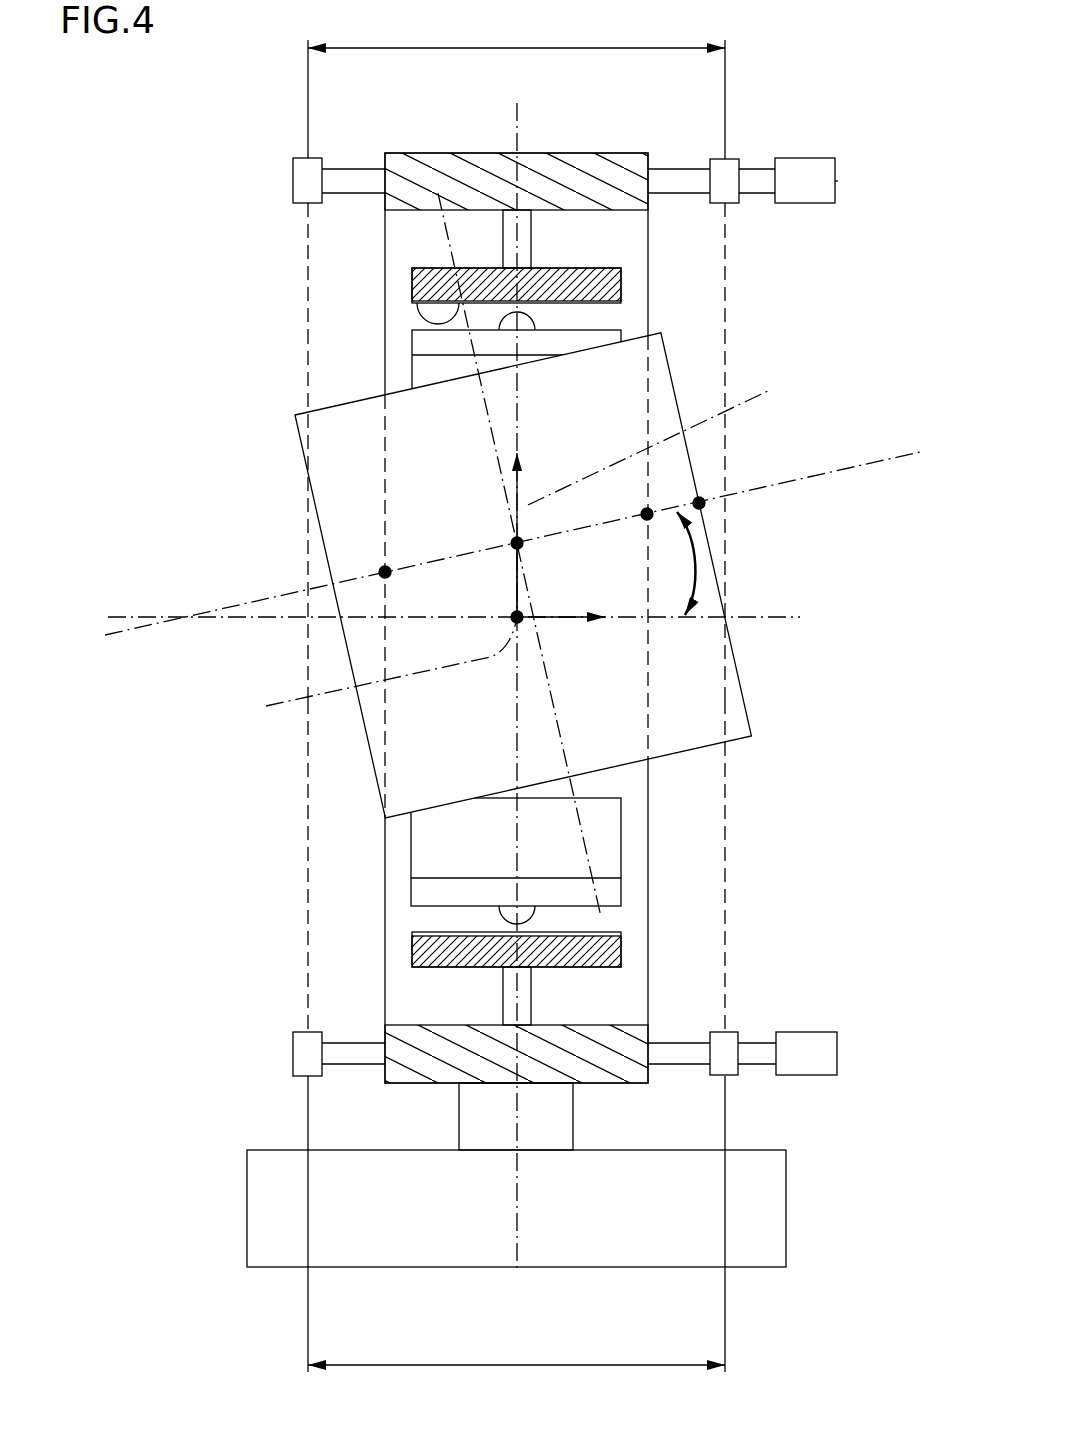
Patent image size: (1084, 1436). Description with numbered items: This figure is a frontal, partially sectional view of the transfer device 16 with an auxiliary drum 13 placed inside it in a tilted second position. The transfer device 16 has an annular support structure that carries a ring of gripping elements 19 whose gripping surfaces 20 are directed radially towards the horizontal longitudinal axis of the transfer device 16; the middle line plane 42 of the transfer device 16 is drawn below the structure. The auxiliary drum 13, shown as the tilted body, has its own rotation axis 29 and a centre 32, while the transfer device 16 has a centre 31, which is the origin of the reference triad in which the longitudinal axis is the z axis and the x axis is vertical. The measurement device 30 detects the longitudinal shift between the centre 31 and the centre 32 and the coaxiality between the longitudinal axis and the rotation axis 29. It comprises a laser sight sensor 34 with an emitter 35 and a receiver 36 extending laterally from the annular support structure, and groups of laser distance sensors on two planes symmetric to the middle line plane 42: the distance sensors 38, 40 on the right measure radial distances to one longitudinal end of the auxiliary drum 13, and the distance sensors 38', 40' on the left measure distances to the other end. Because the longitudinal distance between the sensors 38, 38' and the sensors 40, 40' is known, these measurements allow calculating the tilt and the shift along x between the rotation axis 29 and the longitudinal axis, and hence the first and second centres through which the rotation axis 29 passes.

The auxiliary drum 13 is at (660, 317).
The transfer device 16 is at (850, 152).
The gripping elements 19 is at (398, 355).
The gripping surfaces 20 is at (447, 235).
The rotation axis 29 is at (847, 473).
The measurement device 30 is at (282, 154).
The centre of the transfer device 31 is at (266, 706).
The centre of the crown structure and auxiliary drum 32 is at (665, 436).
The sensor 34 is at (803, 150).
The emitter 35 is at (835, 180).
The receiver 36 is at (837, 1057).
The distance sensor 38 is at (755, 138).
The distance sensor 38' is at (262, 180).
The distance sensor 40 is at (757, 1085).
The distance sensor 40' is at (265, 1070).
The middle line plane 42 is at (517, 1198).